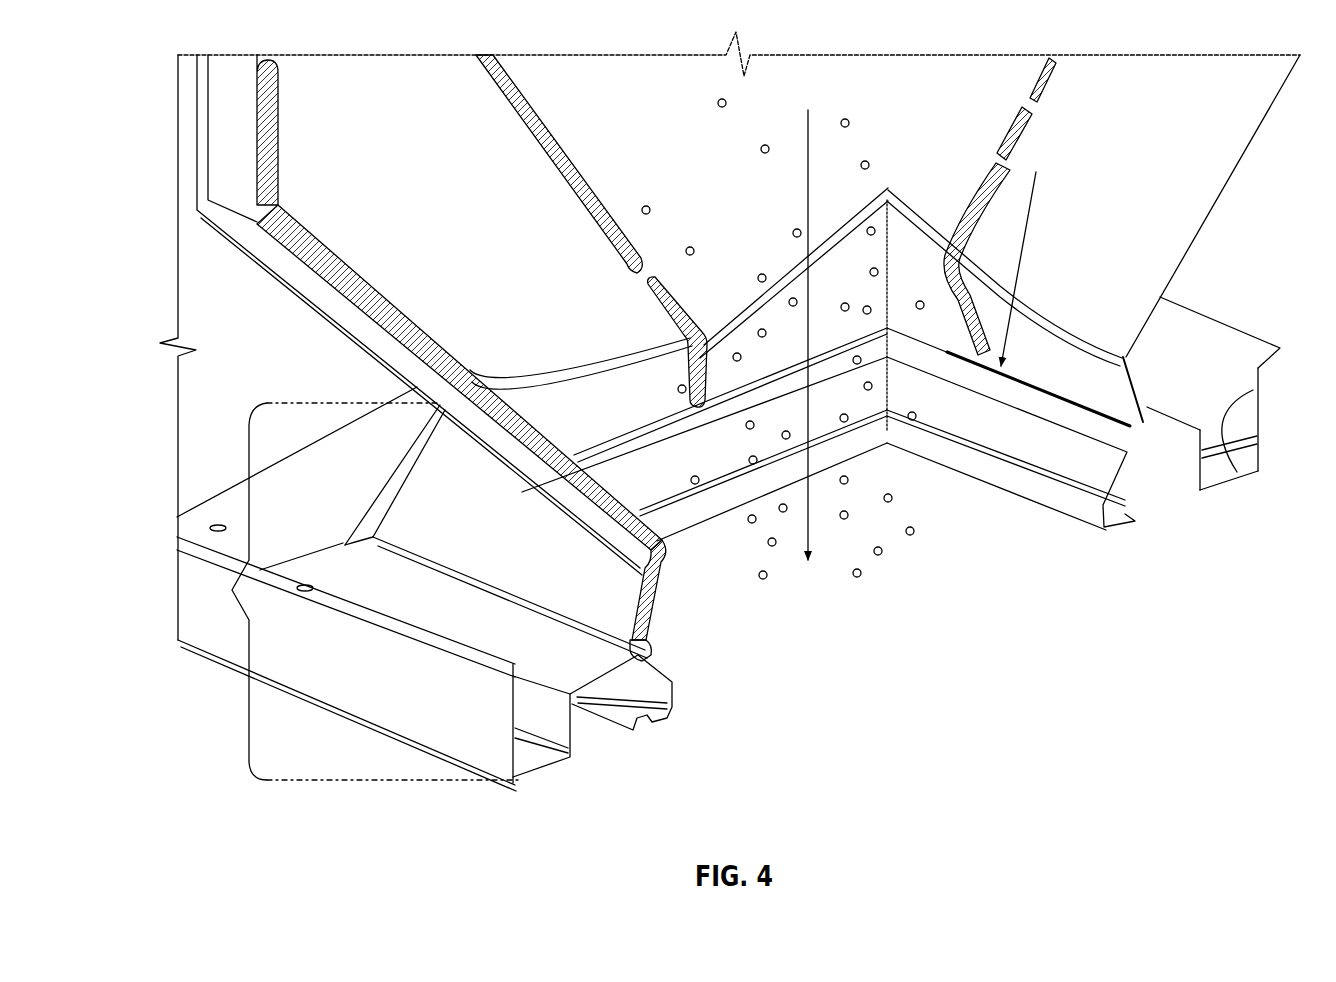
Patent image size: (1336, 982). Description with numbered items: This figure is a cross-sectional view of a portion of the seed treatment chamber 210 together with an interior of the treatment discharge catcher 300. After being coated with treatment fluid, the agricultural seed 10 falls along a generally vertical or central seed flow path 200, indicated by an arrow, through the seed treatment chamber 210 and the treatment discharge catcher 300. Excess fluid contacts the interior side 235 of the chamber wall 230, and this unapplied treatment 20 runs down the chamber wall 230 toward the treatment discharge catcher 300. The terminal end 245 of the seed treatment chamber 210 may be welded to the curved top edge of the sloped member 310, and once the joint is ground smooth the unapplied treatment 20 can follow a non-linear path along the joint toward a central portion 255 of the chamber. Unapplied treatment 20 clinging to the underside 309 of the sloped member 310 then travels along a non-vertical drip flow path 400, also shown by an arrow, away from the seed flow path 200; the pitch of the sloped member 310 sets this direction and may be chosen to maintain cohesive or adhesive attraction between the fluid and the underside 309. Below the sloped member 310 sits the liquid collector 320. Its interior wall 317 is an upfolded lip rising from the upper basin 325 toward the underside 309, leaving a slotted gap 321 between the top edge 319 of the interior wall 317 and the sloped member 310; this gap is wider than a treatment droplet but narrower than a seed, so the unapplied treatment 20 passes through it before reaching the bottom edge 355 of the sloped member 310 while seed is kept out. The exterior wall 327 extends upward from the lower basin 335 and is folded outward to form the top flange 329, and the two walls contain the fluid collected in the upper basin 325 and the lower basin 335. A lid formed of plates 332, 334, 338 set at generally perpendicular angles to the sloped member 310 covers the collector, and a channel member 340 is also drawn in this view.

The agricultural seed 10 is at (848, 120).
The unapplied treatment 20 is at (330, 258).
The seed flow path 200 is at (805, 142).
The seed treatment chamber 210 is at (333, 338).
The chamber wall 230 is at (1214, 203).
The interior side 235 is at (703, 230).
The terminal end 245 is at (518, 378).
The central portion 255 is at (731, 244).
The treatment discharge catcher 300 is at (795, 722).
The underside 309 is at (1097, 383).
The sloped member 310 is at (542, 529).
The interior wall 317 is at (646, 648).
The top edge 319 is at (642, 611).
The liquid collector 320 is at (387, 681).
The slotted gap 321 is at (1080, 403).
The upper basin 325 is at (1145, 437).
The exterior wall 327 is at (1203, 478).
The top flange 329 is at (502, 683).
The plate 332 is at (387, 463).
The plate 334 is at (525, 650).
The lower basin 335 is at (1240, 460).
The plate 338 is at (1228, 371).
The channel member 340 is at (1075, 471).
The bottom edge 355 is at (407, 547).
The drip flow path 400 is at (990, 293).